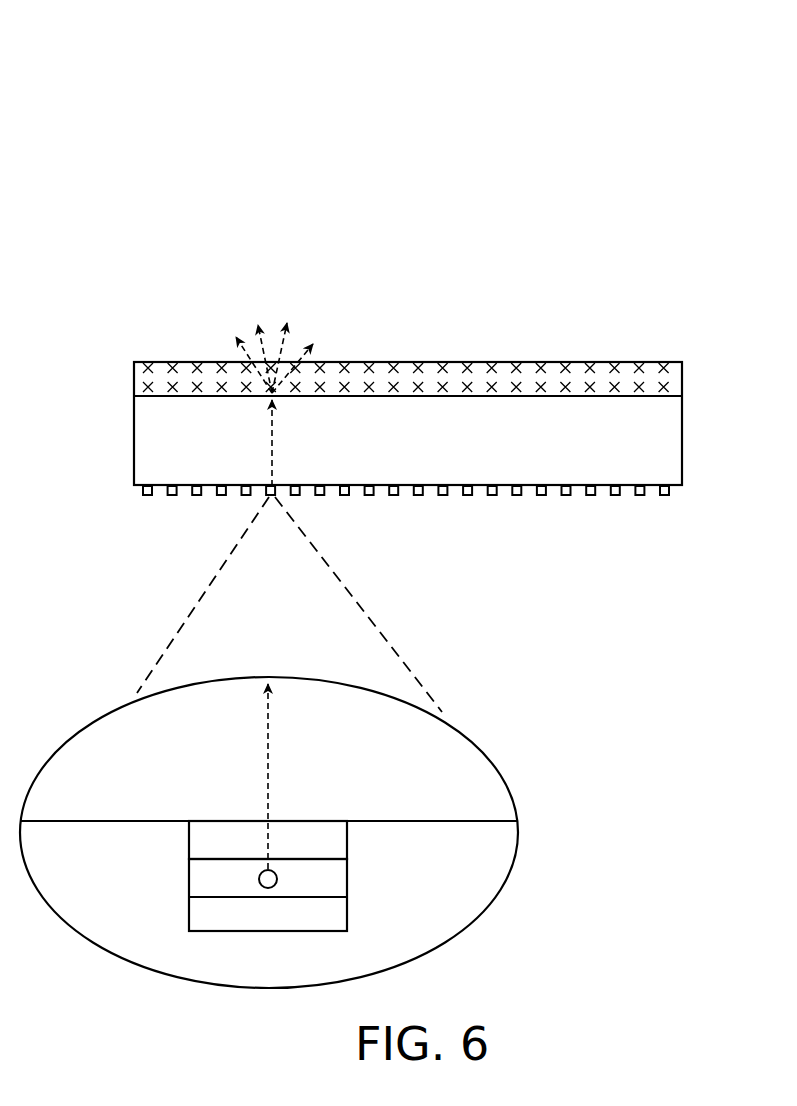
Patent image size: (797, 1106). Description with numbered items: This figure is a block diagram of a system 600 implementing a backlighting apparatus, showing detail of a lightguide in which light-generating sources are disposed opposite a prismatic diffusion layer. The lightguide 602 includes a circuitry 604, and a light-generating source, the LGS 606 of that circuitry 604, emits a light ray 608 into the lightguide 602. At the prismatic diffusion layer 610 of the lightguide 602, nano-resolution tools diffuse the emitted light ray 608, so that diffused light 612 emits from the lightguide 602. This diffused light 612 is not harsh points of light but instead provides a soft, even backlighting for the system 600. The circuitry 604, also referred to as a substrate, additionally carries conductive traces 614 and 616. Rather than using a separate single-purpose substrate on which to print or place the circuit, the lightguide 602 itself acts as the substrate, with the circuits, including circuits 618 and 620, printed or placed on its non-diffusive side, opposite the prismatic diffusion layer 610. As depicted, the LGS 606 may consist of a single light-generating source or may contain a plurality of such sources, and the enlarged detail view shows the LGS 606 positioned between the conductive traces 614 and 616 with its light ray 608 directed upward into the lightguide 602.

The system 600 is at (402, 302).
The lightguide 602 is at (133, 423).
The circuitry 604 is at (273, 497).
The LGS 606 is at (267, 890).
The light ray 608 is at (275, 465).
The prismatic diffusion layer 610 is at (133, 362).
The diffused light 612 is at (288, 318).
The conductive trace 614 is at (207, 849).
The conductive trace 616 is at (323, 923).
The circuit 618 is at (452, 497).
The circuit 620 is at (595, 498).